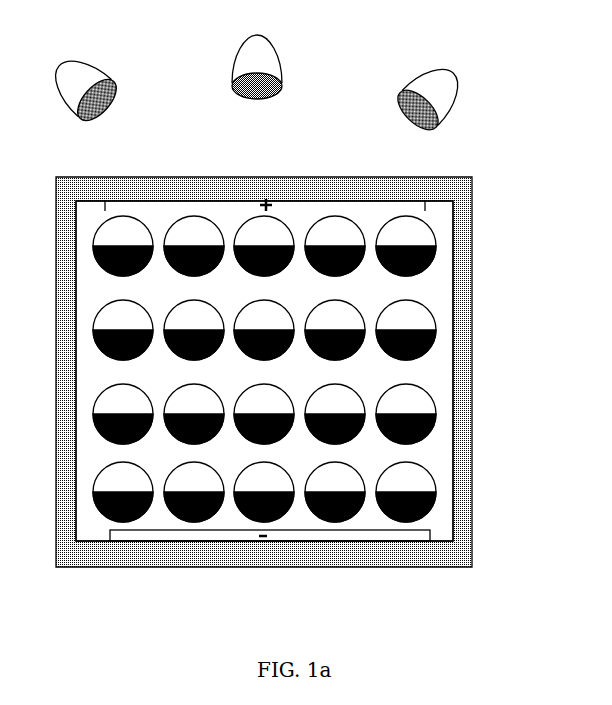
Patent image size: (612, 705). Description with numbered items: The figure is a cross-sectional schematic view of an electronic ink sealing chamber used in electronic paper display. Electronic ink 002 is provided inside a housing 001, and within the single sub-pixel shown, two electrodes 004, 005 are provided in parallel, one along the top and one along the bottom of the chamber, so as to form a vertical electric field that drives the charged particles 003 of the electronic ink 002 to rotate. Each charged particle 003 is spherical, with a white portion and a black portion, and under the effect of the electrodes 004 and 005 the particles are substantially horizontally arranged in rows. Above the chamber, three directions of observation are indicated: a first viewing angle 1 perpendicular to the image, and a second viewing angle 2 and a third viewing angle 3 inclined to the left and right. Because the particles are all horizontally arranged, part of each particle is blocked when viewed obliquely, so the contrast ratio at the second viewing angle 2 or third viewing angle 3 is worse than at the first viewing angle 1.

The first viewing angle 1 is at (257, 54).
The second viewing angle 2 is at (81, 85).
The third viewing angle 3 is at (436, 90).
The housing 001 is at (462, 267).
The electronic ink 002 is at (445, 345).
The charged particles 003 is at (420, 413).
The electrode 004 is at (400, 208).
The electrode 005 is at (337, 533).